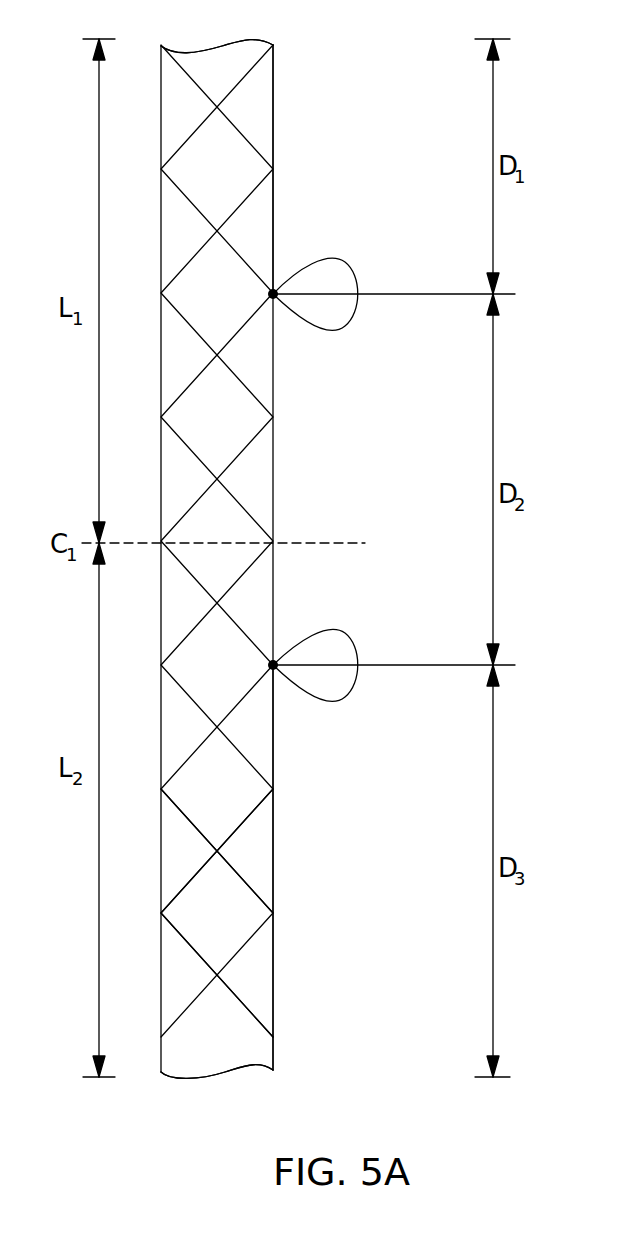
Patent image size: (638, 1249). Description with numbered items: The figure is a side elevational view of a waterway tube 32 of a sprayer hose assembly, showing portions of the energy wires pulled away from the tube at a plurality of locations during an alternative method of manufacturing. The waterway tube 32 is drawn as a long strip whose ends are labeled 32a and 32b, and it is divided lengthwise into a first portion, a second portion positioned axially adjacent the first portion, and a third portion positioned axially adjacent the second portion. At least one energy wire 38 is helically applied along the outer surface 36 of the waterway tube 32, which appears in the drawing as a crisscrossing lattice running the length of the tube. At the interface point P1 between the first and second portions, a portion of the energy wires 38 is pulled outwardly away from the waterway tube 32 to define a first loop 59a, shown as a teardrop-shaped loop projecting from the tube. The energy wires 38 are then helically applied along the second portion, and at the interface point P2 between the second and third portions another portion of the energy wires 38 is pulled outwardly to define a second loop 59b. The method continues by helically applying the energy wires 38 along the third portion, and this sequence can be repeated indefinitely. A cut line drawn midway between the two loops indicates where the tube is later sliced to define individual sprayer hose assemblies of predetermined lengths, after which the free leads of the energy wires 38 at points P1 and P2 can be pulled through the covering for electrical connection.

The waterway tube 32 is at (273, 208).
The first end of stent 32a is at (331, 522).
The second end of stent 32b is at (296, 41).
The outer surface 36 is at (250, 916).
The energy wire 38 is at (258, 398).
The first loop 59a is at (360, 280).
The second loop 59b is at (338, 700).
The interface point P1 is at (273, 294).
The interface point P2 is at (273, 665).